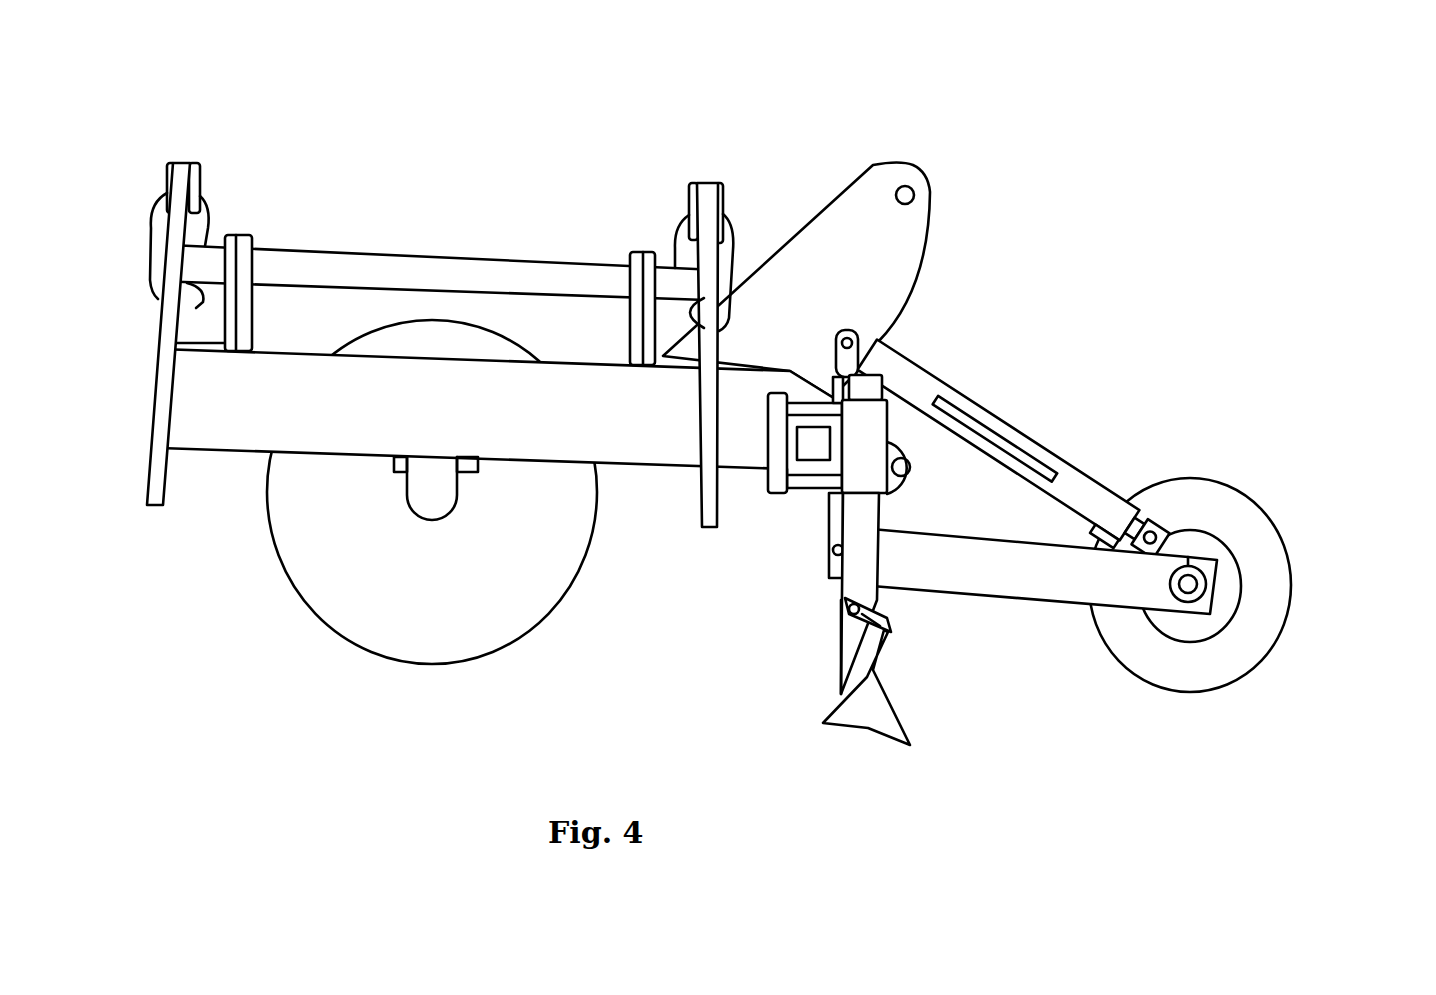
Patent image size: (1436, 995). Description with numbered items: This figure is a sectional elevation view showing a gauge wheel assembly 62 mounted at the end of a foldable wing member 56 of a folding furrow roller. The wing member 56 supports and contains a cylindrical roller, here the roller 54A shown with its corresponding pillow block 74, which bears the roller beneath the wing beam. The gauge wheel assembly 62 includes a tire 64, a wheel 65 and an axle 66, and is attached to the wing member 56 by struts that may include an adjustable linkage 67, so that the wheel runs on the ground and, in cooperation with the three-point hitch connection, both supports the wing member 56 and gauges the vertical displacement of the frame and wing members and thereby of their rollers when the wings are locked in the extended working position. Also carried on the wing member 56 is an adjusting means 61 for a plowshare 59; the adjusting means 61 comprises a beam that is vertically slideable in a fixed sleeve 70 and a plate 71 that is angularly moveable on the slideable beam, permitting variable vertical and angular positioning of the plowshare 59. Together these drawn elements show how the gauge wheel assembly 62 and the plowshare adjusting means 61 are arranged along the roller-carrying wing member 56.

The gauge wheel assembly 62 is at (1232, 158).
The foldable wing member 56 is at (135, 402).
The cylindrical roller 54A is at (325, 622).
The pillow block 74 is at (408, 503).
The fixed sleeve 70 is at (910, 372).
The adjustable linkage 67 is at (1040, 444).
The axle 66 is at (1188, 566).
The wheel 65 is at (1258, 512).
The tire 64 is at (1293, 573).
The adjusting means 61 is at (880, 593).
The plate 71 is at (840, 640).
The plowshare 59 is at (867, 727).